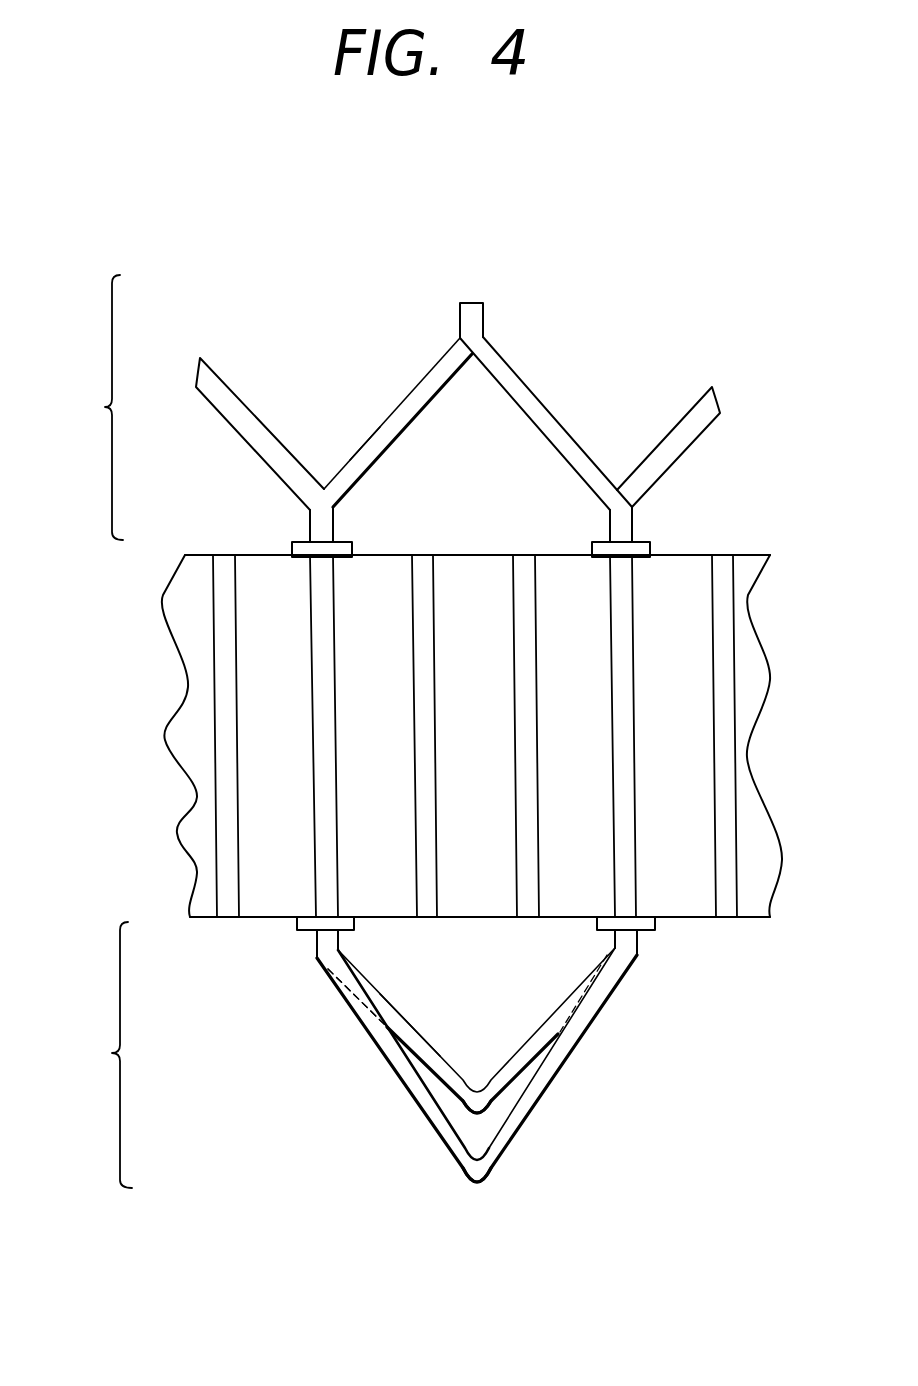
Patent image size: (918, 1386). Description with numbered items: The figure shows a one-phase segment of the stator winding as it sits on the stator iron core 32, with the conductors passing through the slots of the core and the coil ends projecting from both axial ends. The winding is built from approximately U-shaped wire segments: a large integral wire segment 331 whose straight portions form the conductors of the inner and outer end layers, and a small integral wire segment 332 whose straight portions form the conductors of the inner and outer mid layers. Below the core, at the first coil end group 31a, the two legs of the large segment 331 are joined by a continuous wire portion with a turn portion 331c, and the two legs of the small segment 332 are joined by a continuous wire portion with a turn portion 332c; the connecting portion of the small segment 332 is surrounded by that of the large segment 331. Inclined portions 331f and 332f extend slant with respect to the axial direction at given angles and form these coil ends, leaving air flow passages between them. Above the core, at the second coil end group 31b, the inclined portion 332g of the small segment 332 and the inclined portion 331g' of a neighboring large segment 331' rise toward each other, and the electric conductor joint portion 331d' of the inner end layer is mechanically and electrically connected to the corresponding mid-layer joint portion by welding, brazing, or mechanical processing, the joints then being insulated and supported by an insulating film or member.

The stator iron core 32 is at (698, 918).
The large integral wire segment 331 is at (488, 770).
The large integral wire segment 331' is at (546, 389).
The electric conductor joint portion of the inner end layer 331d' is at (489, 253).
The inclined portion 331g' is at (321, 385).
The inclined portion 331f is at (372, 1037).
The turn portion 331c is at (473, 1170).
The small integral wire segment 332 is at (417, 1028).
The inclined portion 332g is at (403, 402).
The inclined portion 332f is at (432, 1053).
The turn portion 332c is at (472, 1102).
The second coil end group 31b is at (90, 407).
The first coil end group 31a is at (97, 1055).